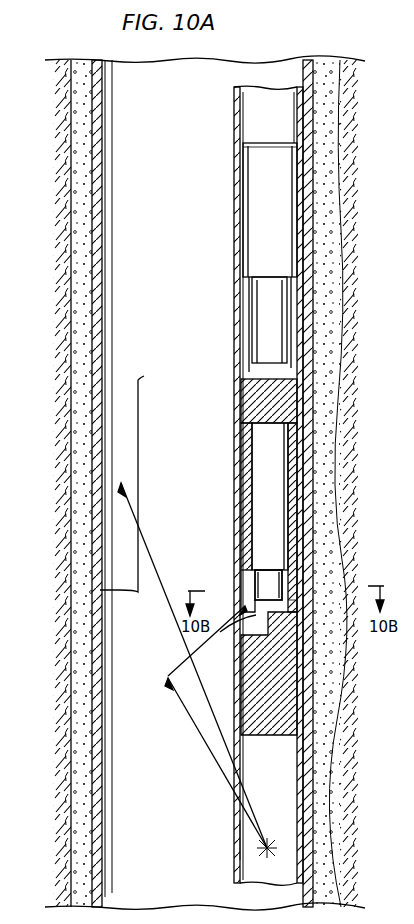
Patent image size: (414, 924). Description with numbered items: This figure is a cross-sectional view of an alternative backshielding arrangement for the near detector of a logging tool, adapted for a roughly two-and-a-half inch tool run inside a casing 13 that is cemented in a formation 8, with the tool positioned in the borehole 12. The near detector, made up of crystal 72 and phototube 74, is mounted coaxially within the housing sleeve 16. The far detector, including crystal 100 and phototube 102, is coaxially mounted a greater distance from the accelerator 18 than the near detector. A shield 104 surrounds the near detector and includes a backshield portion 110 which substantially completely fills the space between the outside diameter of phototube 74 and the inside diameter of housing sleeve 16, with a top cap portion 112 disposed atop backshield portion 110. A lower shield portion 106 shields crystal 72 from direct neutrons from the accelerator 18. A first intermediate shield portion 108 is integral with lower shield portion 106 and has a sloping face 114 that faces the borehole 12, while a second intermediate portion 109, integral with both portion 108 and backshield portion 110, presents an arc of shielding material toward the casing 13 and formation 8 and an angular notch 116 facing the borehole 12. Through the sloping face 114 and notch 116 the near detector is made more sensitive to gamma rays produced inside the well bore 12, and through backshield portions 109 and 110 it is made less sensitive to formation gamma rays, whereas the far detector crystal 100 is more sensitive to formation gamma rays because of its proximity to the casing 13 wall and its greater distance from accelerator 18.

The formation 8 is at (373, 354).
The borehole 12 is at (158, 822).
The casing 13 is at (310, 296).
The housing sleeve 16 is at (233, 840).
The accelerator 18 is at (271, 846).
The crystal 72 is at (287, 574).
The phototube 74 is at (268, 457).
The crystal 100 is at (258, 316).
The phototube 102 is at (258, 203).
The shield 104 is at (100, 590).
The lower shield portion 106 is at (282, 698).
The first intermediate shield portion 108 is at (280, 630).
The second intermediate portion 109 is at (293, 597).
The backshield portion 110 is at (293, 515).
The top cap portion 112 is at (286, 402).
The sloping face 114 is at (212, 641).
The angular notch 116 is at (247, 578).